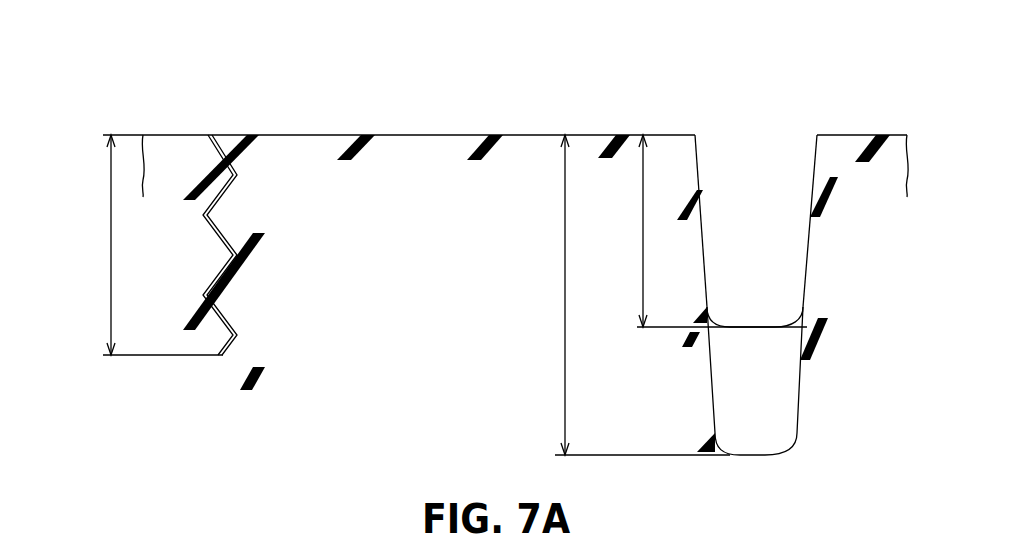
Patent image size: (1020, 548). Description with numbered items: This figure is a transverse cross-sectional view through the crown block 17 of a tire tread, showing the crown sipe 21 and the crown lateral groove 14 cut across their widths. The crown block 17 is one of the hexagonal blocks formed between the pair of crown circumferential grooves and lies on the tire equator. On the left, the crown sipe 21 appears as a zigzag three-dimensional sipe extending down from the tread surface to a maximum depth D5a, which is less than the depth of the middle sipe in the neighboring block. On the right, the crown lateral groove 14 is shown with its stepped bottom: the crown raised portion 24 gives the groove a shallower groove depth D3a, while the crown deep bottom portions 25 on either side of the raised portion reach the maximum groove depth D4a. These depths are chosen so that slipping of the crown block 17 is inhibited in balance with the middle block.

The crown lateral groove 14 is at (754, 132).
The crown block 17 is at (855, 135).
The crown sipe 21 is at (205, 122).
The crown raised portion 24 is at (810, 273).
The crown deep bottom portion 25 is at (805, 388).
The groove depth at the crown raised portion D3a is at (692, 231).
The maximum groove depth of the crown lateral groove D4a is at (614, 295).
The maximum depth of the crown sipe D5a is at (135, 245).